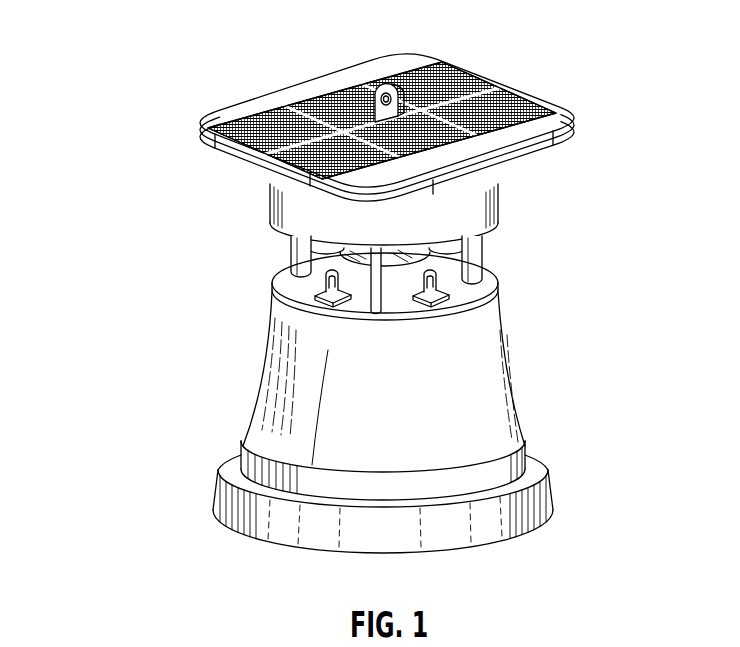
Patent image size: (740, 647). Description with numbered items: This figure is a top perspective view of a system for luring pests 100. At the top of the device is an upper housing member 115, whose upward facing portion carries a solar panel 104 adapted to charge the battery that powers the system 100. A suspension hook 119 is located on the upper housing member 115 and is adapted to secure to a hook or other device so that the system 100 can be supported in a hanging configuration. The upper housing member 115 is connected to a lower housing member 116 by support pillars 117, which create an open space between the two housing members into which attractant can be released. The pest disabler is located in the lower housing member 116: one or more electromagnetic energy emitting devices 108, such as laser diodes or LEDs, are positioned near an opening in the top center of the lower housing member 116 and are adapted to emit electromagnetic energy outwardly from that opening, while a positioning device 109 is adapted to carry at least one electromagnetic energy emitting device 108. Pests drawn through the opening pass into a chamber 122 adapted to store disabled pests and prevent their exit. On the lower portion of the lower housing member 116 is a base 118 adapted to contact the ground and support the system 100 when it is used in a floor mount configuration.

The system for luring pests 100 is at (143, 31).
The solar panel 104 is at (516, 66).
The electromagnetic energy emitting device 108 is at (314, 290).
The positioning device 109 is at (450, 296).
The upper housing member 115 is at (197, 112).
The lower housing member 116 is at (260, 378).
The support pillars 117 is at (290, 256).
The base 118 is at (228, 466).
The suspension hook 119 is at (380, 80).
The chamber 122 is at (512, 456).